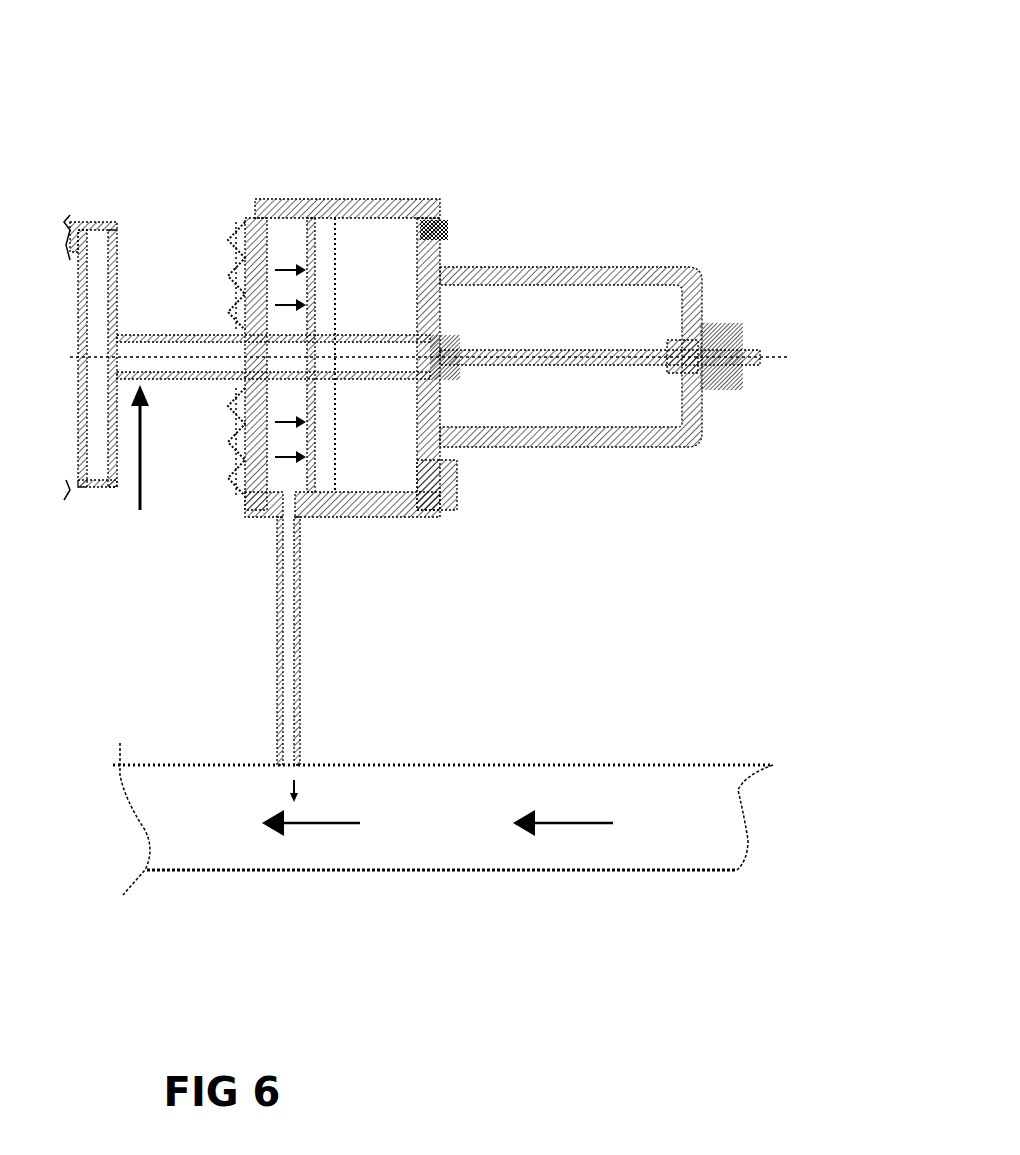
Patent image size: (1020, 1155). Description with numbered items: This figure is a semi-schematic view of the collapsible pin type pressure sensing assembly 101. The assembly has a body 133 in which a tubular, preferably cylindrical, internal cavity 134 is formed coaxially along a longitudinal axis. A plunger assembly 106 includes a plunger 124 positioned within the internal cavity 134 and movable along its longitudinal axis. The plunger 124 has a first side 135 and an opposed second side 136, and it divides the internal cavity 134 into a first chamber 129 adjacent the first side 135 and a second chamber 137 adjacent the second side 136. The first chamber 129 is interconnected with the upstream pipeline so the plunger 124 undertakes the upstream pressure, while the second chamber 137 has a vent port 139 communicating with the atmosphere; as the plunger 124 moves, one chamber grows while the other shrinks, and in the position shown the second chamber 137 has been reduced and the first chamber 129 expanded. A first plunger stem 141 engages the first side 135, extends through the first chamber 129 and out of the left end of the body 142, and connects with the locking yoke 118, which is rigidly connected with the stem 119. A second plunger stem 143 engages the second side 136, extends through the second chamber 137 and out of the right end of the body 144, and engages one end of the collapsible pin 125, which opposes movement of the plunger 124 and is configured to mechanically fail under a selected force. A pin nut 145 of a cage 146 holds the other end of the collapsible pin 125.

The collapsible pin type pressure sensing assembly 101 is at (597, 165).
The plunger assembly 106 is at (333, 215).
The locking yoke 118 is at (93, 270).
The stem 119 is at (125, 480).
The plunger 124 is at (327, 467).
The collapsible pin 125 is at (575, 365).
The first chamber 129 is at (290, 240).
The body 133 is at (437, 160).
The internal cavity 134 is at (350, 217).
The first side 135 is at (297, 385).
The second side 136 is at (335, 400).
The second chamber 137 is at (392, 408).
The vent port 139 is at (445, 218).
The first plunger stem 141 is at (203, 367).
The left end of the body 142 is at (250, 337).
The second plunger stem 143 is at (397, 347).
The right end of the body 144 is at (428, 377).
The pin nut 145 is at (728, 390).
The cage 146 is at (685, 435).